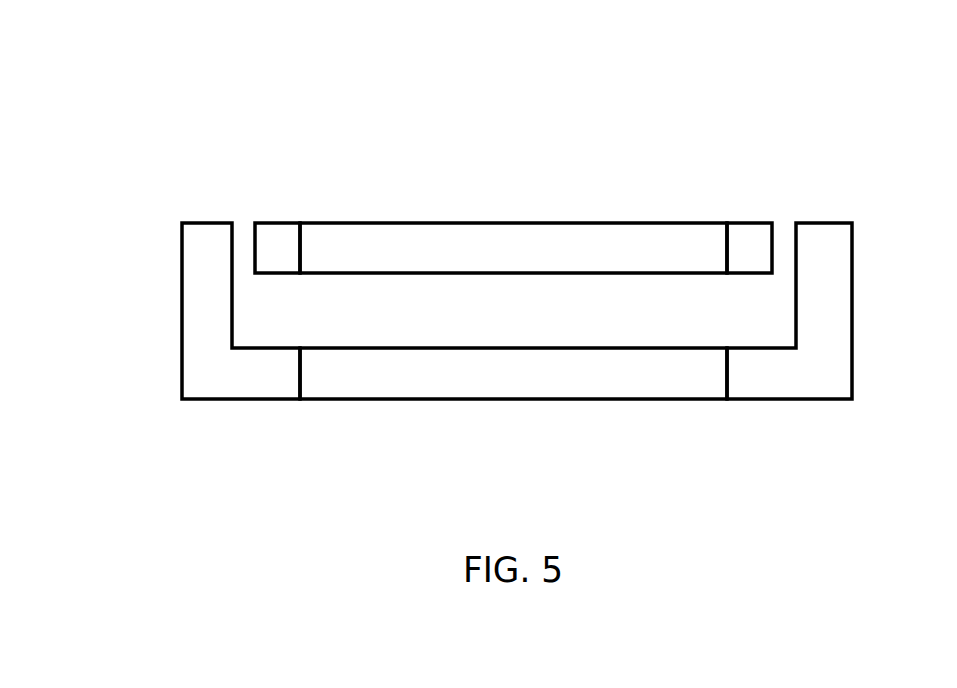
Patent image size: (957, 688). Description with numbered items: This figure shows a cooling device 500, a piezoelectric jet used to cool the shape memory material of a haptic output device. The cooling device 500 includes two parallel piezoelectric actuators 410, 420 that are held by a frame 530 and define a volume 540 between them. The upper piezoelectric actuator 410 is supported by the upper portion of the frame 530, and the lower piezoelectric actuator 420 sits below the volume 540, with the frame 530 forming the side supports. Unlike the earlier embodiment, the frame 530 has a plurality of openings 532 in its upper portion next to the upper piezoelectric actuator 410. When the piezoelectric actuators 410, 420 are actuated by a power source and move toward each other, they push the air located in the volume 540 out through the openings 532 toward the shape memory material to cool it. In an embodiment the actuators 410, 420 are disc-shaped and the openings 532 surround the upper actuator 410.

The cooling device 500 is at (140, 97).
The upper piezoelectric actuator 410 is at (492, 222).
The piezoelectric actuator 420 is at (490, 400).
The frame 530 is at (283, 222).
The openings 532 is at (242, 221).
The volume 540 is at (382, 324).